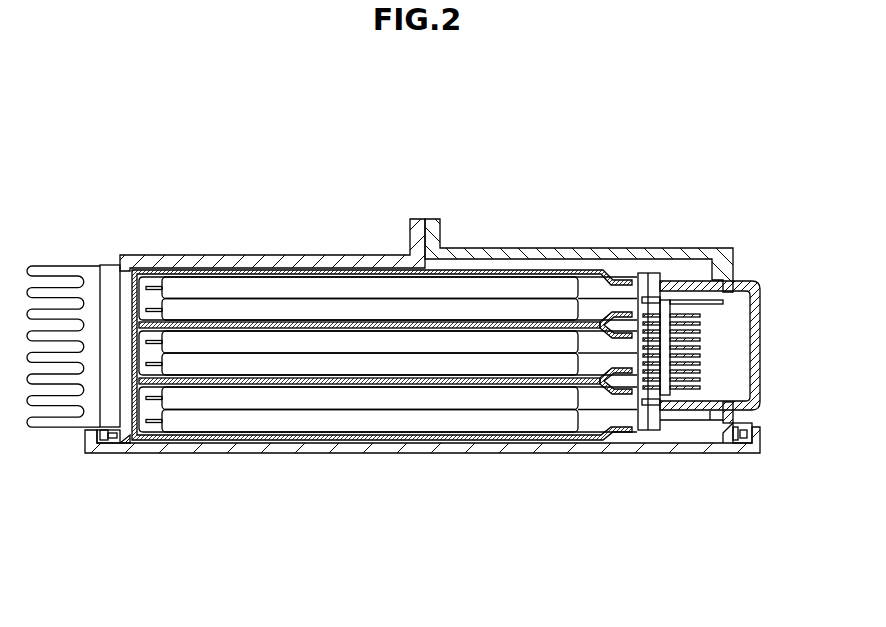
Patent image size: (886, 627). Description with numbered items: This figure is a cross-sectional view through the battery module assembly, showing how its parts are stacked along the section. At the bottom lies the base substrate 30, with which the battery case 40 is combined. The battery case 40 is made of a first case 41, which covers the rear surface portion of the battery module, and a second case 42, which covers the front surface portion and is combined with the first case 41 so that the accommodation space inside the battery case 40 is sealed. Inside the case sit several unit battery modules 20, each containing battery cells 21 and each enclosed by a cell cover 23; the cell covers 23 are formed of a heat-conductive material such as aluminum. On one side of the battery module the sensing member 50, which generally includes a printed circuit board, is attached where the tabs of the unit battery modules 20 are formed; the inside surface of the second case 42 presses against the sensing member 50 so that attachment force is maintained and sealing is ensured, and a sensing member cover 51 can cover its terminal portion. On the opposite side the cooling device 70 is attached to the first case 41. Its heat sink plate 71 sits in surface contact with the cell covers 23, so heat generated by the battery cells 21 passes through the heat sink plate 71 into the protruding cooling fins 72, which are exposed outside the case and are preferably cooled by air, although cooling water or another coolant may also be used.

The unit battery module 20 is at (430, 517).
The battery cell 21 is at (293, 423).
The cell cover 23 is at (427, 435).
The base substrate 30 is at (500, 447).
The battery case 40 is at (477, 153).
The first case 41 is at (333, 263).
The second case 42 is at (475, 250).
The sensing member 50 is at (705, 355).
The sensing member cover 51 is at (760, 332).
The cooling device 70 is at (32, 193).
The heat sink plate 71 is at (112, 300).
The cooling fins 72 is at (32, 267).